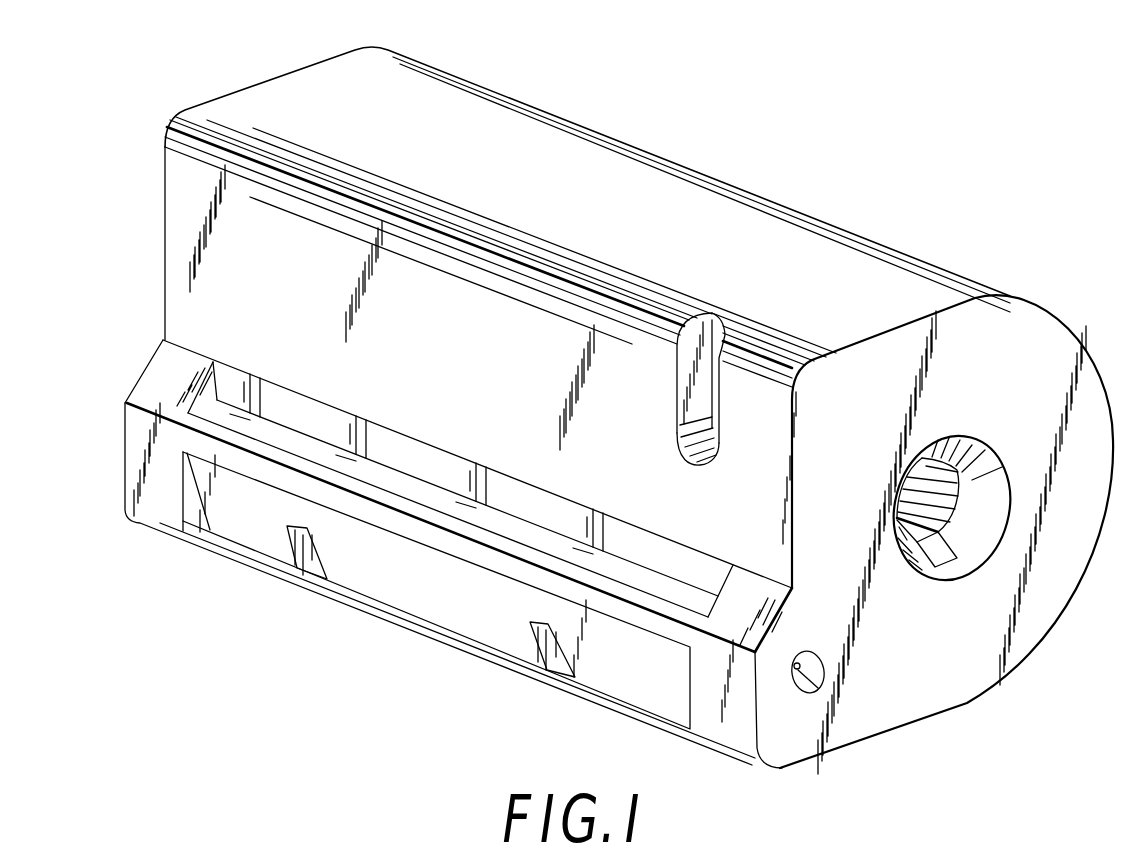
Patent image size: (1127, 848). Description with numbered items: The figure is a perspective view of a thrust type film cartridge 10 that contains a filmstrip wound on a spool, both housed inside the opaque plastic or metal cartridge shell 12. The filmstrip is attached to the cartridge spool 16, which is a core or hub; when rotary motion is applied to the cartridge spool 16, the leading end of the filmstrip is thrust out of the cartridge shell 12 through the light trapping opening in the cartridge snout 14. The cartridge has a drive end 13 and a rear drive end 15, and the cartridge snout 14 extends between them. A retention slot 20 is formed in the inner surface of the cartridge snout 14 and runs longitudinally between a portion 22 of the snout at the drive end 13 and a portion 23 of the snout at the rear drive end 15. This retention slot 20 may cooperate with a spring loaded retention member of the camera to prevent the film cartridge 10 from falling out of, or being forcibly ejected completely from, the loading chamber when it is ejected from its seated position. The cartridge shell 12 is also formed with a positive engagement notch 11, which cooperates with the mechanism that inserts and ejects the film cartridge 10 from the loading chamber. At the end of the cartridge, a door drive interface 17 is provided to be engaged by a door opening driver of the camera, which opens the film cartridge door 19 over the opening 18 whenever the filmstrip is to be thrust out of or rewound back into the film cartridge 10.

The film cartridge 10 is at (860, 139).
The positive engagement notch 11 is at (722, 335).
The cartridge shell 12 is at (540, 98).
The drive end 13 is at (297, 70).
The cartridge snout 14 is at (125, 453).
The rear drive end 15 is at (943, 683).
The cartridge spool 16 is at (942, 580).
The door drive interface 17 is at (806, 695).
The opening 18 is at (200, 525).
The film cartridge door 19 is at (440, 600).
The retention slot 20 is at (295, 440).
The portion of cartridge snout 22 is at (162, 367).
The portion of cartridge snout 23 is at (768, 560).